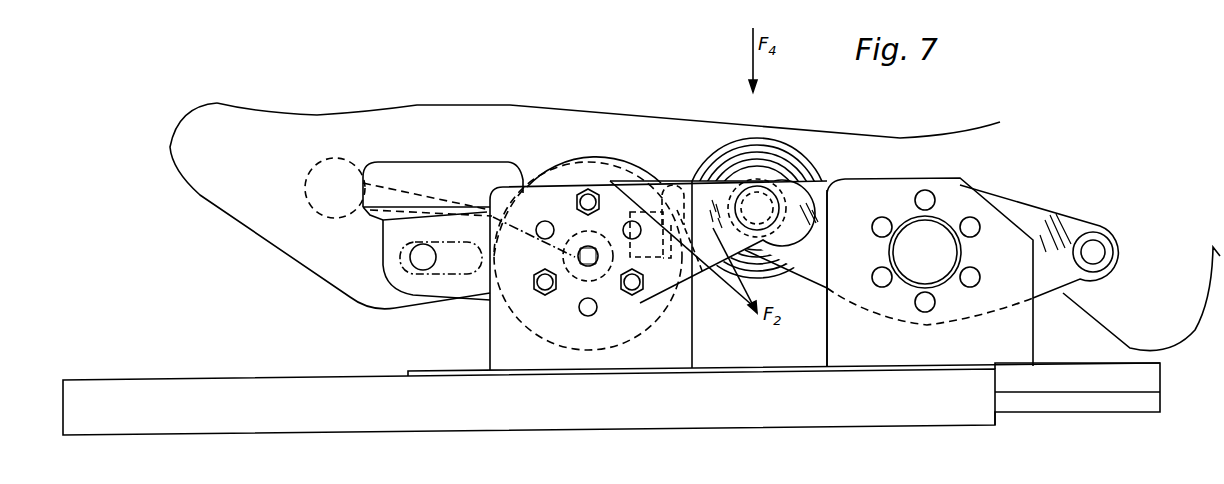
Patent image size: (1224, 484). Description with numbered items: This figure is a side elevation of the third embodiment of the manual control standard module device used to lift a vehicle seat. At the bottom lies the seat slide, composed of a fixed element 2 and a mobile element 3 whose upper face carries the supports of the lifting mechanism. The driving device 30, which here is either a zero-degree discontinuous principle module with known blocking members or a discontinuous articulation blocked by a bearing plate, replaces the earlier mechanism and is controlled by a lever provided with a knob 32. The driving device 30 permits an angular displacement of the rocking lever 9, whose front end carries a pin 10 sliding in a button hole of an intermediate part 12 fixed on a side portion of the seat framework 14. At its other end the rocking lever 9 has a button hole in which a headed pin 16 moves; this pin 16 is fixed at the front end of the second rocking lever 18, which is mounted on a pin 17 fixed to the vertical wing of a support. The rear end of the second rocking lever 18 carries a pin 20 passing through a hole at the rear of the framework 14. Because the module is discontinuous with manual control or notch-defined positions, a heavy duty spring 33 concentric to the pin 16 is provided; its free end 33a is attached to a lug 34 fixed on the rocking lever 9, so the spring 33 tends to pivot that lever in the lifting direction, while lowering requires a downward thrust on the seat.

The fixed element 2 is at (850, 415).
The mobile element 3 is at (1073, 402).
The rocking lever 9 is at (703, 273).
The pin 10 is at (425, 262).
The intermediate part 12 is at (408, 177).
The framework 14 is at (558, 105).
The pin 16 is at (752, 202).
The pin 17 is at (937, 227).
The second rocking lever 18 is at (1015, 208).
The pin 20 is at (1100, 247).
The driving device 30 is at (590, 170).
The knob 32 is at (307, 183).
The heavy duty spring 33 is at (765, 188).
The free end 33a is at (673, 183).
The lug 34 is at (665, 255).